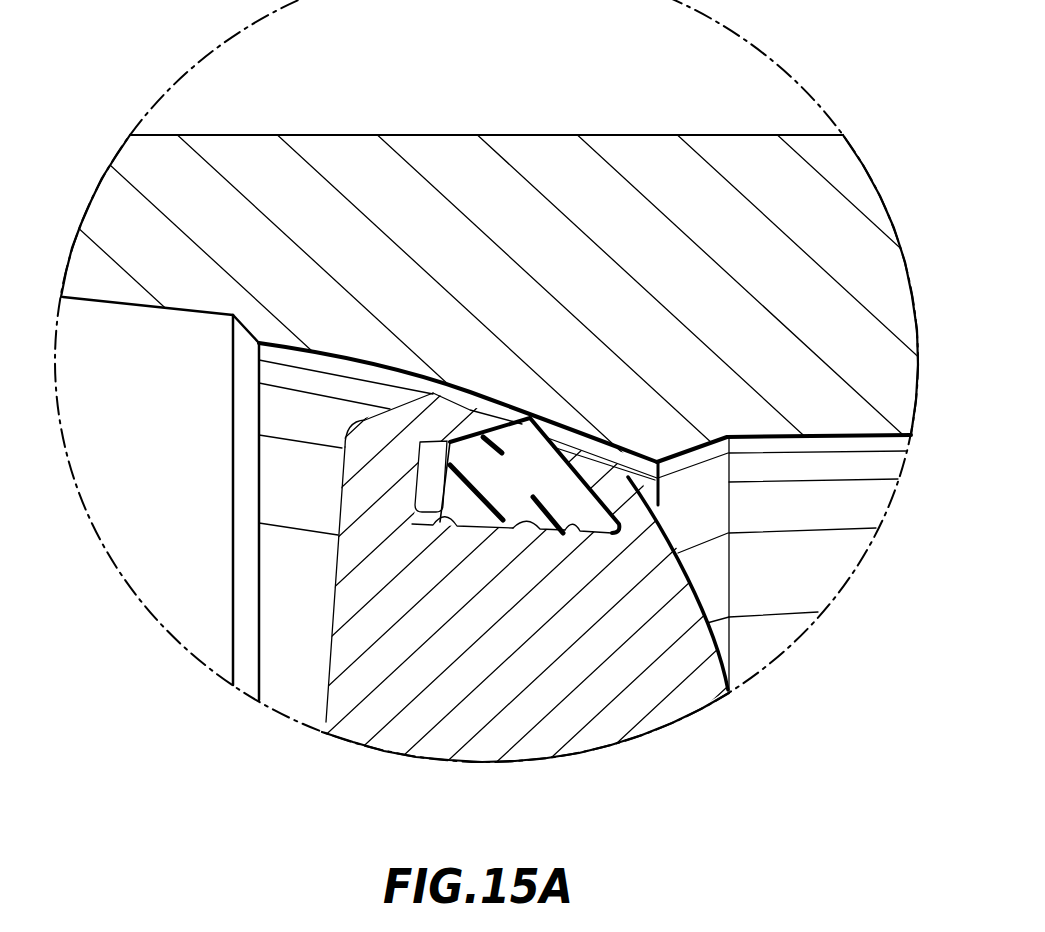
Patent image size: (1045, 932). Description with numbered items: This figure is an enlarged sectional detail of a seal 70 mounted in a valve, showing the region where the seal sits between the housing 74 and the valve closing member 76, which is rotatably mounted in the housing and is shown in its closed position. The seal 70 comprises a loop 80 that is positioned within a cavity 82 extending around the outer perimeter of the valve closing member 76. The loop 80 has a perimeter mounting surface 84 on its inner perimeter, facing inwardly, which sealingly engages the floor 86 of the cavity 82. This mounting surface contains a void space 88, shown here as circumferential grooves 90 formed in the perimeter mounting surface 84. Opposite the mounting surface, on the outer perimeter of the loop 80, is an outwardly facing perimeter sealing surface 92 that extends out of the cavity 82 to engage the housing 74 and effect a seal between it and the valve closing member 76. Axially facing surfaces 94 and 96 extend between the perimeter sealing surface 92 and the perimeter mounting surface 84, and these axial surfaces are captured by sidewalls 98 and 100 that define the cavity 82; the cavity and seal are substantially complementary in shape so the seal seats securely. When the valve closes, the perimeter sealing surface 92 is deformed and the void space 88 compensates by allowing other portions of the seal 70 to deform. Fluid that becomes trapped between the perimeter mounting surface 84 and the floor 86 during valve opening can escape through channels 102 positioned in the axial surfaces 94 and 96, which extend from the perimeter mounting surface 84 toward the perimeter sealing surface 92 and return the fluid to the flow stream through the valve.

The seal 70 is at (494, 489).
The housing 74 is at (530, 137).
The valve closing member 76 is at (357, 716).
The loop 80 is at (497, 528).
The cavity 82 is at (404, 520).
The perimeter mounting surface 84 is at (512, 522).
The floor 86 is at (570, 530).
The void space 88 is at (488, 535).
The circumferential grooves 90 is at (526, 530).
The perimeter sealing surface 92 is at (558, 428).
The axially facing surface 94 is at (577, 458).
The axially facing surface 96 is at (420, 454).
The sidewall 98 is at (625, 497).
The sidewall 100 is at (453, 416).
The channels 102 is at (430, 487).